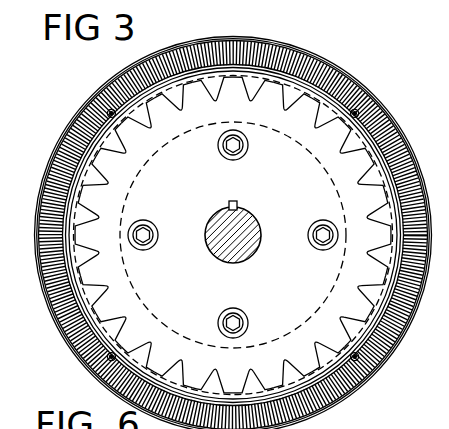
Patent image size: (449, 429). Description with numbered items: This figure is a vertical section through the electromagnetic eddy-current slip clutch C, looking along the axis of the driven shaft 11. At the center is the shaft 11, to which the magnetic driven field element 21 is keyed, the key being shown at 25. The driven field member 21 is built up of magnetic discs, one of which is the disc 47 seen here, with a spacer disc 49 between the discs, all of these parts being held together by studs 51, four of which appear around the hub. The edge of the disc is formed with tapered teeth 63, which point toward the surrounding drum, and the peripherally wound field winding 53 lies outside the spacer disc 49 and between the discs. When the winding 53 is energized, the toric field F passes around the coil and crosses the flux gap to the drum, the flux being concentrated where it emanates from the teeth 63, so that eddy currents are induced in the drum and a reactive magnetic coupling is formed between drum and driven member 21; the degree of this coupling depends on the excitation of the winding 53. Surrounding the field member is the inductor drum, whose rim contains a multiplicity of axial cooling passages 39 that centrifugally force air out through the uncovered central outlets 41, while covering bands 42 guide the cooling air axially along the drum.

The driven shaft 11 is at (241, 249).
The magnetic driven field element 21 is at (368, 266).
The key 25 is at (230, 204).
The axial cooling passages 39 is at (404, 149).
The central outlets 41 is at (237, 39).
The covering bands 42 is at (365, 92).
The disc 47 is at (312, 93).
The spacer disc 49 is at (322, 302).
The studs 51 is at (318, 230).
The field winding 53 is at (270, 47).
The tapered teeth 63 is at (213, 101).
The toric field F is at (130, 78).
The eddy-current slip clutch C is at (343, 405).